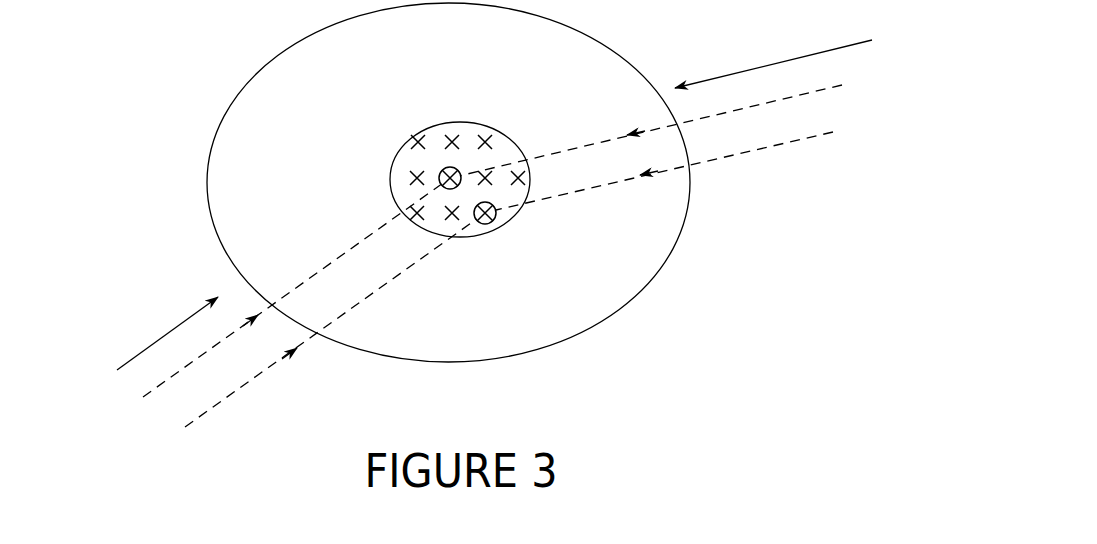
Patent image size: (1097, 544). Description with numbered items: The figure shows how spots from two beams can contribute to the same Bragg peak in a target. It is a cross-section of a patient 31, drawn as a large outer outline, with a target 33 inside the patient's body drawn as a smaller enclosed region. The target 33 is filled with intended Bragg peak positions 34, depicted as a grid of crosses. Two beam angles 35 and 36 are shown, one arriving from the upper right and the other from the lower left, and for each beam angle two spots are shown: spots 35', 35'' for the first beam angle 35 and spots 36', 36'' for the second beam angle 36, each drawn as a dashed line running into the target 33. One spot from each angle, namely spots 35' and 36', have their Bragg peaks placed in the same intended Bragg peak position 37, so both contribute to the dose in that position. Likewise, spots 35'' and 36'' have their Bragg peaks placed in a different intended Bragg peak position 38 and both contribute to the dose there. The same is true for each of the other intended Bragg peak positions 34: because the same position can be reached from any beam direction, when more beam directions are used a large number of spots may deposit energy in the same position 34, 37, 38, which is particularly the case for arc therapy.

The patient 31 is at (510, 52).
The target 33 is at (505, 153).
The intended Bragg peak positions 34 is at (413, 140).
The beam angle 35 is at (773, 56).
The spot 35' is at (664, 171).
The spot 35'' is at (651, 130).
The beam angle 36 is at (167, 330).
The spot 36' is at (292, 297).
The spot 36'' is at (330, 326).
The intended Bragg peak position 37 is at (439, 178).
The intended Bragg peak position 38 is at (497, 220).